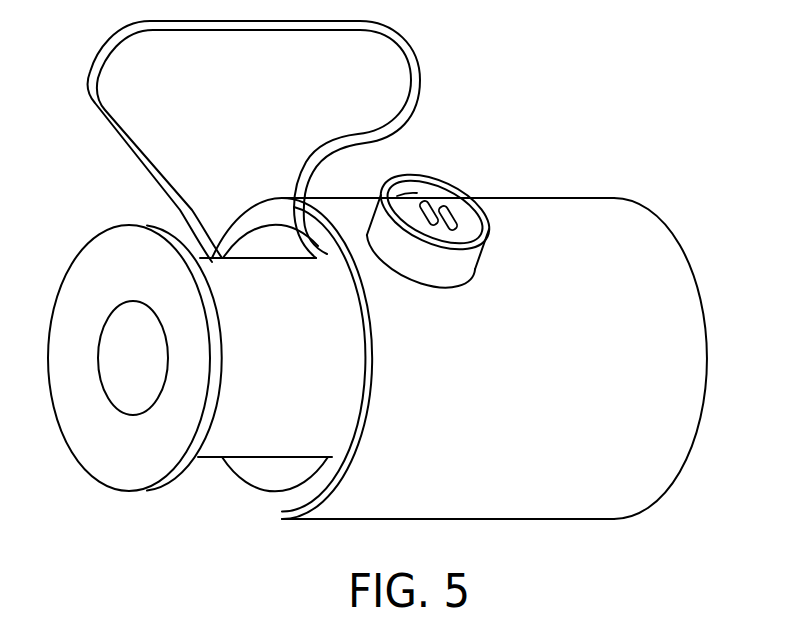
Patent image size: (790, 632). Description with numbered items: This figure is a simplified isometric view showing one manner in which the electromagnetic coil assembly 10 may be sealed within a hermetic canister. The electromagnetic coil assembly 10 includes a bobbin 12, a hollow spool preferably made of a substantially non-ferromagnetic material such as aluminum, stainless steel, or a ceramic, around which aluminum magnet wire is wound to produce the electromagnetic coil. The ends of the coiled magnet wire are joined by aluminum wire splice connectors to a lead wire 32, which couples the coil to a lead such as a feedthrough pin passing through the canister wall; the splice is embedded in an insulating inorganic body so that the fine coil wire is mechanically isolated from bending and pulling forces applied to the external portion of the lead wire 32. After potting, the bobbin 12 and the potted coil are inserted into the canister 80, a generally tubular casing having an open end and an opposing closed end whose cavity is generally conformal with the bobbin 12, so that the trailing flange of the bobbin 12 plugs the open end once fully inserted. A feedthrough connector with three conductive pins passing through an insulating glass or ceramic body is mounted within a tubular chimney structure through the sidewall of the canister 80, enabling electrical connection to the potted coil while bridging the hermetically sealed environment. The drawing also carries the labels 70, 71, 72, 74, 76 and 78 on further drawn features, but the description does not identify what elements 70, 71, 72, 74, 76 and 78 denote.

The electromagnetic coil assembly 10 is at (679, 76).
The bobbin 12 is at (82, 268).
The lead wire 32 is at (421, 80).
The housing assembly 70 is at (690, 546).
The hub opening 71 is at (243, 473).
The hub 72 is at (315, 377).
The end flange 74 is at (268, 509).
The housing cylinder 76 is at (668, 232).
The plug prongs 78 is at (423, 203).
The canister 80 is at (462, 272).